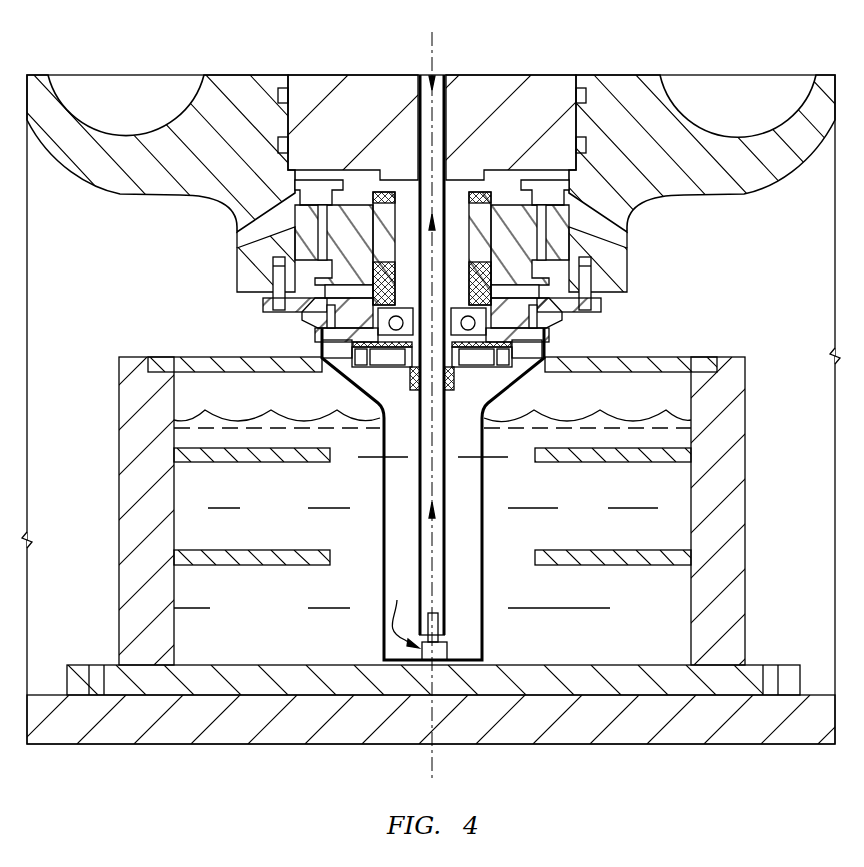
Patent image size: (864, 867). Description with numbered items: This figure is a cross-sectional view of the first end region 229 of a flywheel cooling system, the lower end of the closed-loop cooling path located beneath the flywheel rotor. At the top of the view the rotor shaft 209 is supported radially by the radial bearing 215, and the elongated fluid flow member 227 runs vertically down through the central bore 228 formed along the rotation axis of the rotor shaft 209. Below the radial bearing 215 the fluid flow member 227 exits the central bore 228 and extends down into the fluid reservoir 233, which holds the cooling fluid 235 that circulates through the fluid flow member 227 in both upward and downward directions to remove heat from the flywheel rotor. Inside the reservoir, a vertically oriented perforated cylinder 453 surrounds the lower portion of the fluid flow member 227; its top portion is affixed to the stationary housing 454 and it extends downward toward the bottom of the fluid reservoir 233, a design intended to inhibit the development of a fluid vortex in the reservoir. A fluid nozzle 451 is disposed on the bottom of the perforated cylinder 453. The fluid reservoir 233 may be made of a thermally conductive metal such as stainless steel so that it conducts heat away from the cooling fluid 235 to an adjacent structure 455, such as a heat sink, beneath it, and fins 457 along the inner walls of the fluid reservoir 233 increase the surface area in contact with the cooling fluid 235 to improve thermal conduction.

The rotor shaft 209 is at (457, 250).
The radial bearing 215 is at (473, 323).
The elongated fluid flow member 227 is at (417, 86).
The central bore 228 is at (465, 88).
The first end region 229 is at (622, 305).
The fluid reservoir 233 is at (728, 472).
The cooling fluid 235 is at (275, 624).
The fluid nozzle 451 is at (421, 660).
The perforated cylinder 453 is at (487, 642).
The stationary housing 454 is at (302, 310).
The adjacent structure 455 is at (697, 718).
The fins 457 is at (650, 453).